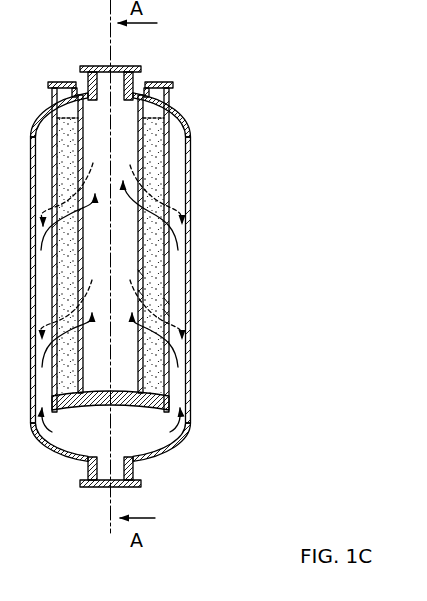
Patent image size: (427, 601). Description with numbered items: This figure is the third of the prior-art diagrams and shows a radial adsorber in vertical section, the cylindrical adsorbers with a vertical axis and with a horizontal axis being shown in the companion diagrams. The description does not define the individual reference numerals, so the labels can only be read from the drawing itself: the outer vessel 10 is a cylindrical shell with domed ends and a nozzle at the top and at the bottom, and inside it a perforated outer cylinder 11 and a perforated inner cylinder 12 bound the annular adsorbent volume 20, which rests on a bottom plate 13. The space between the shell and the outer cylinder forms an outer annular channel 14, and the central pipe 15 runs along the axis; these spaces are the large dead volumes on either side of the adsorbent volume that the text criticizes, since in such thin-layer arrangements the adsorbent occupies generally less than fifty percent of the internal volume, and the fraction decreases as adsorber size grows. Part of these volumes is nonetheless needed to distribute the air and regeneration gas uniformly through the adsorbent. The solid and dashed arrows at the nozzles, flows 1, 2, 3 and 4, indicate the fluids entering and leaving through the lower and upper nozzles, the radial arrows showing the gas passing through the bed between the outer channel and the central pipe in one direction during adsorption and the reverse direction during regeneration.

The first fluid flow (bottom nozzle inlet) 1 is at (102, 491).
The second fluid flow (top nozzle inlet) 2 is at (102, 25).
The third fluid flow (top nozzle outlet) 3 is at (124, 33).
The fourth fluid flow (bottom nozzle outlet) 4 is at (123, 490).
The reactor vessel shell 10 is at (192, 163).
The outer perforated cylinder 11 is at (170, 303).
The inner perforated cylinder 12 is at (145, 279).
The bottom plate 13 is at (156, 397).
The outer annular channel 14 is at (183, 256).
The center pipe 15 is at (128, 267).
The catalyst bed 20 is at (155, 148).